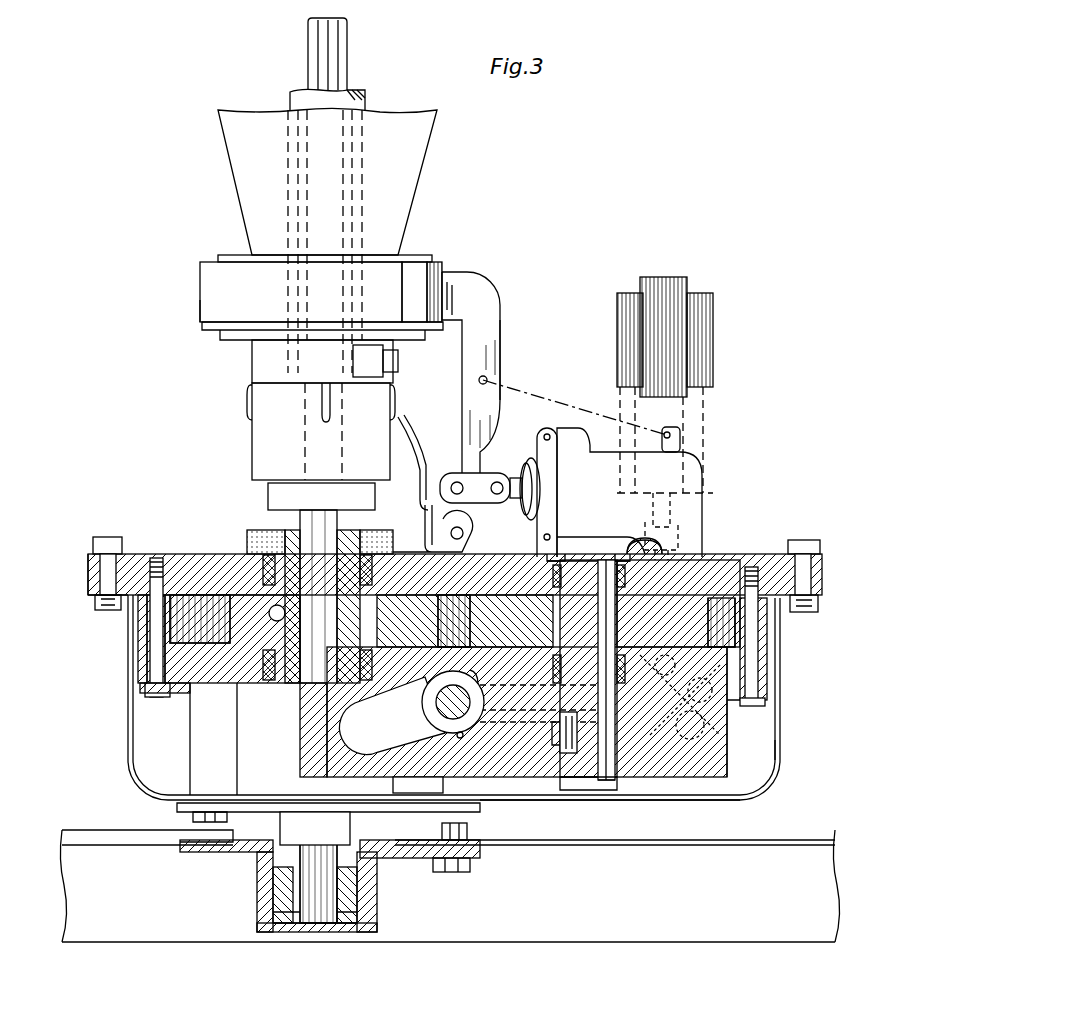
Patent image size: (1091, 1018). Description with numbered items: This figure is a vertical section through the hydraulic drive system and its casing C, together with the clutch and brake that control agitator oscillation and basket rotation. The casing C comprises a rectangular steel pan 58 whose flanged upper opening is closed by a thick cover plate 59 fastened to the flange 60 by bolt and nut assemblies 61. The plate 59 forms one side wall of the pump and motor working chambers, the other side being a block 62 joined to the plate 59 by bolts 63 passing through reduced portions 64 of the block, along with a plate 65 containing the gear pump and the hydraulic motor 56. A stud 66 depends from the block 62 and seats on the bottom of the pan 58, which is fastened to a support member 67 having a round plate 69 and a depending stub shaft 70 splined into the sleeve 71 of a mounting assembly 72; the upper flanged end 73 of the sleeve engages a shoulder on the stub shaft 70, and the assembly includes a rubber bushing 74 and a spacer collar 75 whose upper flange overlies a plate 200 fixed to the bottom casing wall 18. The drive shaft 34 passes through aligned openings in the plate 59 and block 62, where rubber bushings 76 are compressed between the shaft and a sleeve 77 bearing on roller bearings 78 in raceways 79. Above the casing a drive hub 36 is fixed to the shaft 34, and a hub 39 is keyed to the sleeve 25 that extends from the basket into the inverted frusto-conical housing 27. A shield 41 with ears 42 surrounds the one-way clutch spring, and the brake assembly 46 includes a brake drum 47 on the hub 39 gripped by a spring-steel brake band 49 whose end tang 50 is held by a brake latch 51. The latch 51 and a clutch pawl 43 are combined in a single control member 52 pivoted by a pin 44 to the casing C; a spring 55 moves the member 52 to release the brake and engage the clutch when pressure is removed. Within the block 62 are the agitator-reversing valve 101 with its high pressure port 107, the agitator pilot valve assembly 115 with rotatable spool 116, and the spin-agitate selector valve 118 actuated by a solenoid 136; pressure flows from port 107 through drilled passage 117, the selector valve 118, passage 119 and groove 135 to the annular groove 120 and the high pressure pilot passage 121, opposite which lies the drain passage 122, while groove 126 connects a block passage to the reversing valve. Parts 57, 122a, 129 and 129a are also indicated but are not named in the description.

The bottom casing wall 18 is at (66, 840).
The sleeve 25 is at (352, 100).
The housing 27 is at (242, 166).
The drive shaft 34 is at (318, 50).
The drive hub 36 is at (268, 496).
The hub 39 is at (252, 362).
The shield 41 is at (252, 445).
The ears 42 is at (250, 402).
The clutch pawl 43 is at (412, 462).
The pin 44 is at (446, 510).
The brake assembly 46 is at (180, 310).
The brake member 47 is at (232, 256).
The brake band 49 is at (205, 270).
The end tang 50 is at (442, 270).
The brake latch 51 is at (484, 292).
The control member 52 is at (500, 336).
The spring 55 is at (557, 408).
The hydraulic motor 56 is at (162, 621).
The bolt 57 is at (762, 628).
The pan 58 is at (130, 760).
The cover plate 59 is at (92, 562).
The flange 60 is at (90, 597).
The bolt and nut assemblies 61 is at (108, 537).
The block 62 is at (735, 797).
The bolts 63 is at (185, 692).
The reduced portions 64 is at (140, 686).
The plate 65 is at (140, 640).
The stud 66 is at (198, 737).
The support member 67 is at (175, 808).
The round plate 69 is at (183, 808).
The stub shaft 70 is at (320, 926).
The sleeve 71 is at (275, 905).
The mounting assembly 72 is at (282, 928).
The upper flanged end 73 is at (376, 862).
The rubber bushing 74 is at (376, 920).
The spacer collar 75 is at (262, 882).
The rubber bushings 76 is at (288, 535).
The sleeve 77 is at (285, 688).
The roller bearings 78 is at (370, 598).
The raceways 79 is at (270, 613).
The agitator-reversing valve 101 is at (400, 718).
The high pressure port 107 is at (450, 780).
The agitator pilot valve assembly 115 is at (586, 800).
The valve spool 116 is at (586, 553).
The drilled passage 117 is at (478, 690).
The spin-agitate selector valve 118 is at (702, 562).
The drilled passage 119 is at (680, 724).
The annular groove 120 is at (618, 789).
The high pressure pilot valve passage 121 is at (512, 779).
The pilot valve drain passage 122 is at (660, 716).
The rod end 122a is at (602, 795).
The groove 126 is at (462, 737).
The cover plate 129 is at (203, 590).
The cover plate portion 129a is at (502, 592).
The groove 135 is at (680, 672).
The solenoid 136 is at (720, 330).
The plate 200 is at (457, 872).
The casing C is at (147, 553).